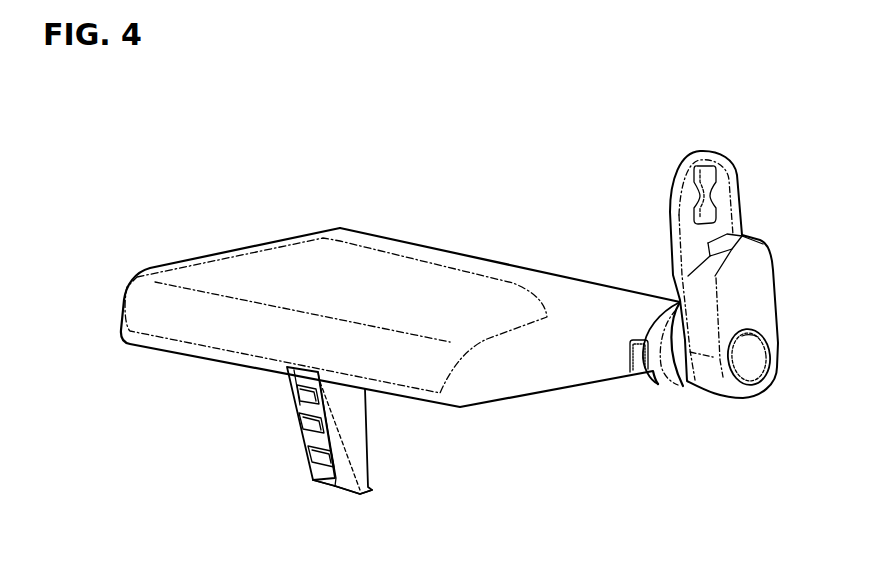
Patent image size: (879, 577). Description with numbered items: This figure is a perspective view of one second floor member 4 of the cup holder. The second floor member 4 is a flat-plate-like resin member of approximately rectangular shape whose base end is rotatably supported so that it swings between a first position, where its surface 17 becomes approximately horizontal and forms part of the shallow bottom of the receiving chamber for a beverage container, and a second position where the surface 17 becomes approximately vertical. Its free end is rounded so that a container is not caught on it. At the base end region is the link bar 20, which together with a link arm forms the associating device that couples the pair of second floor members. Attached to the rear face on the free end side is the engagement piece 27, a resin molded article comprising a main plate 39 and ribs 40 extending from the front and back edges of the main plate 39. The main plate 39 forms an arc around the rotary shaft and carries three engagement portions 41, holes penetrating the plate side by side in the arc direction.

The second floor member 4 is at (306, 223).
The surface 17 is at (230, 268).
The link bar 20 is at (759, 262).
The engagement piece 27 is at (368, 489).
The main plate 39 is at (328, 491).
The rib 40 is at (362, 440).
The engagement portion 41 is at (292, 402).